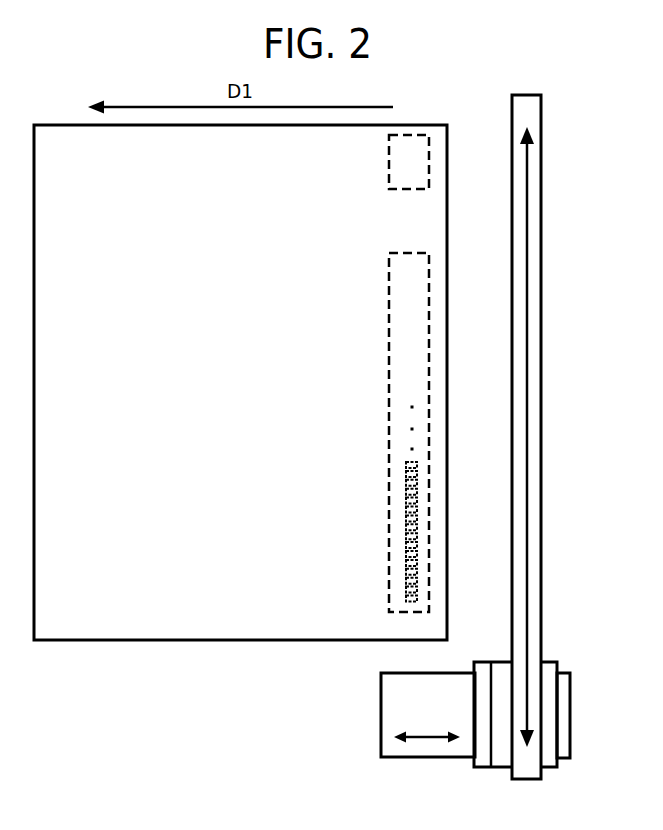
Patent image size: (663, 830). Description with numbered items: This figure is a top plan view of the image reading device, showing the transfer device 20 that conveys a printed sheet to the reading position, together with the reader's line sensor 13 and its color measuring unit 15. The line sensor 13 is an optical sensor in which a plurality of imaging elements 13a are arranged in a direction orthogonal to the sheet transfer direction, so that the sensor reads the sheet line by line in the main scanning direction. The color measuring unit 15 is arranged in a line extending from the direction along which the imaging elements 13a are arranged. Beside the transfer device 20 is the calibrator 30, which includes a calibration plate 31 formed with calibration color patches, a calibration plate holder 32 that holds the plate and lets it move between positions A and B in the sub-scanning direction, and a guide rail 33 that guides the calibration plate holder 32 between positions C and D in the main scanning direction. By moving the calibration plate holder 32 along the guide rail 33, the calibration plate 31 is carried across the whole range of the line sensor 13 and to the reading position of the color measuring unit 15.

The transfer device 20 is at (413, 125).
The color measuring unit 15 is at (389, 163).
The line sensor 13 is at (389, 568).
The imaging elements 13a is at (415, 601).
The calibrator 30 is at (468, 445).
The calibration plate 31 is at (381, 716).
The calibration plate holder 32 is at (557, 763).
The guide rail 33 is at (541, 158).